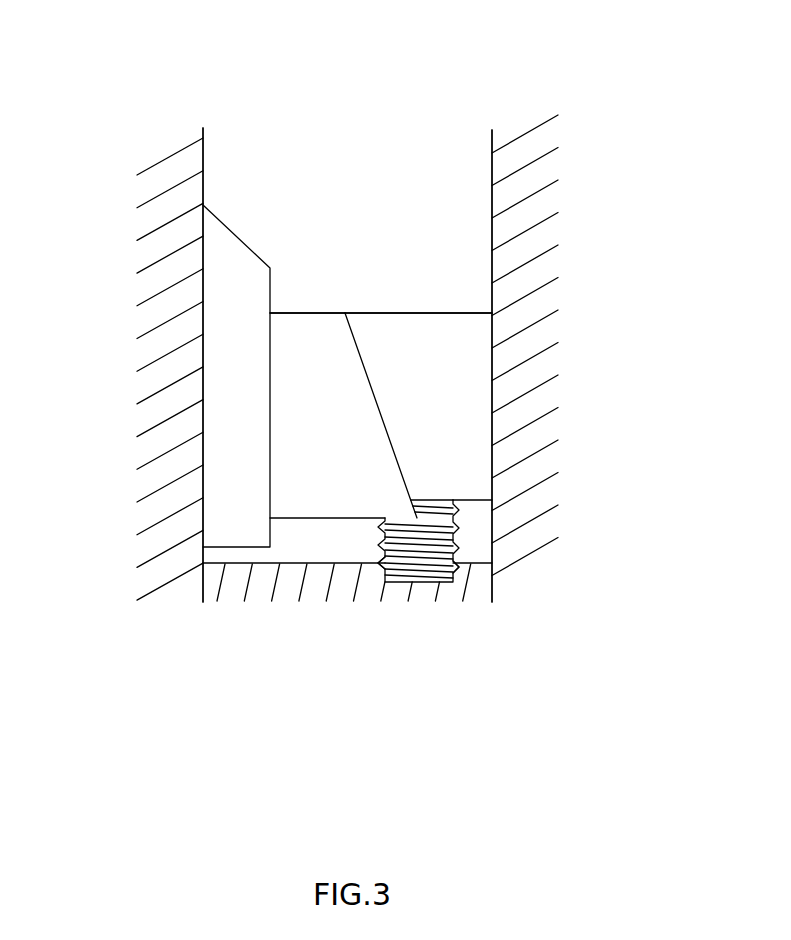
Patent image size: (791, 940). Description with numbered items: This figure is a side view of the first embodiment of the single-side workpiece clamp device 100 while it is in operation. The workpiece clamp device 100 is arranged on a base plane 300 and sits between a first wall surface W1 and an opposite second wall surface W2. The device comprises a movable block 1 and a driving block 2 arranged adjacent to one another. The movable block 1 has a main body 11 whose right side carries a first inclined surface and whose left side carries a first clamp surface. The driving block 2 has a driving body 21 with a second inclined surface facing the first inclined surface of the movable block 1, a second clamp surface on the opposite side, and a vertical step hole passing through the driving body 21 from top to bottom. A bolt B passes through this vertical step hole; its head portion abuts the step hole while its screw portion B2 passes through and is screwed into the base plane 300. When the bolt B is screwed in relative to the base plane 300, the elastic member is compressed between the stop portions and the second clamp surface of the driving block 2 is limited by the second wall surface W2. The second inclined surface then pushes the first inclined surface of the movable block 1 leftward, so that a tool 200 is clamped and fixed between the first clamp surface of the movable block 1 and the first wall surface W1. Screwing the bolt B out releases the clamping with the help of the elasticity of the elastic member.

The workpiece clamp device 100 is at (391, 142).
The tool 200 is at (237, 234).
The base plane 300 is at (314, 601).
The first wall surface W1 is at (135, 235).
The second wall surface W2 is at (553, 235).
The movable block 1 is at (297, 314).
The main body 11 is at (322, 313).
The driving block 2 is at (410, 314).
The driving body 21 is at (455, 313).
The bolt B is at (470, 528).
The screw portion B2 is at (463, 559).